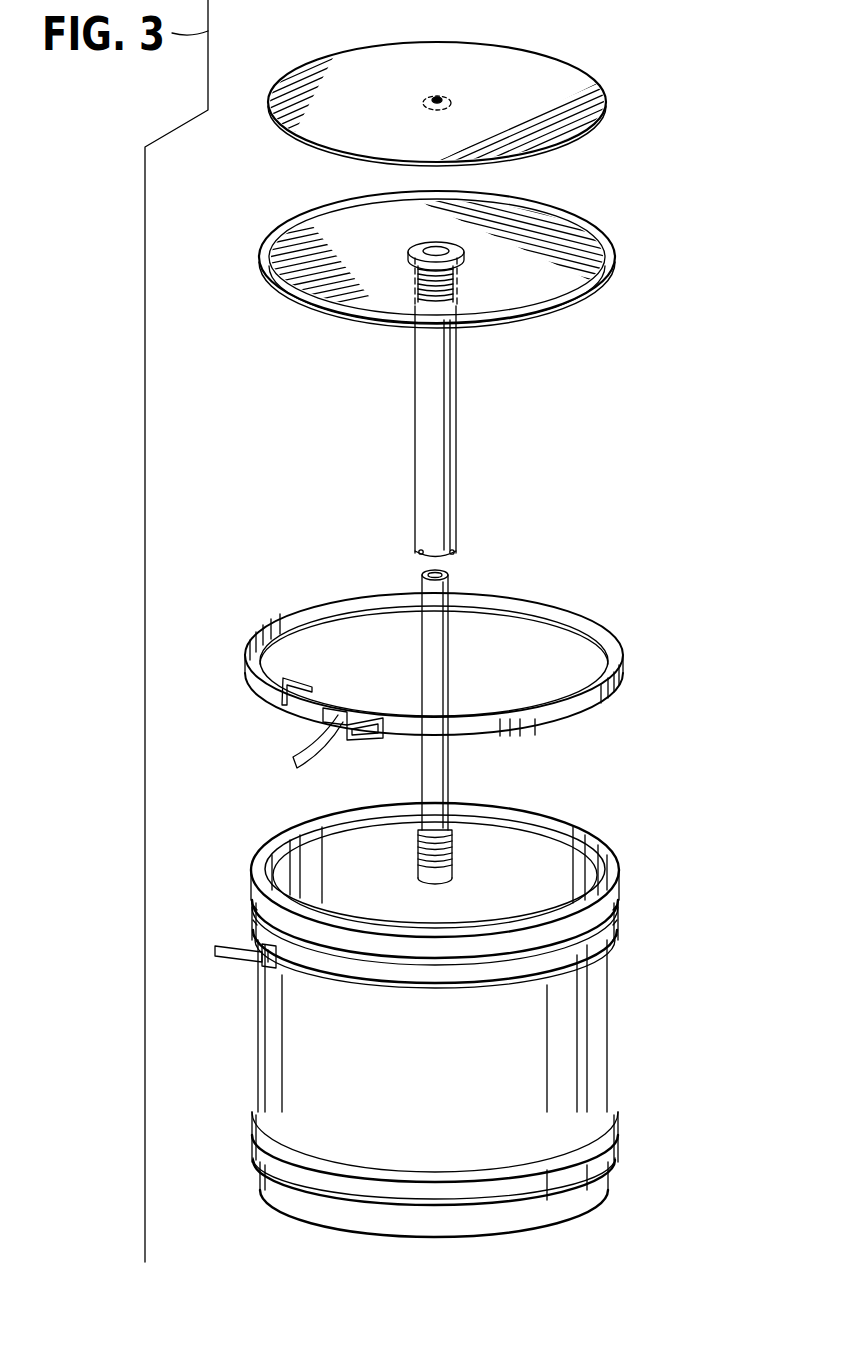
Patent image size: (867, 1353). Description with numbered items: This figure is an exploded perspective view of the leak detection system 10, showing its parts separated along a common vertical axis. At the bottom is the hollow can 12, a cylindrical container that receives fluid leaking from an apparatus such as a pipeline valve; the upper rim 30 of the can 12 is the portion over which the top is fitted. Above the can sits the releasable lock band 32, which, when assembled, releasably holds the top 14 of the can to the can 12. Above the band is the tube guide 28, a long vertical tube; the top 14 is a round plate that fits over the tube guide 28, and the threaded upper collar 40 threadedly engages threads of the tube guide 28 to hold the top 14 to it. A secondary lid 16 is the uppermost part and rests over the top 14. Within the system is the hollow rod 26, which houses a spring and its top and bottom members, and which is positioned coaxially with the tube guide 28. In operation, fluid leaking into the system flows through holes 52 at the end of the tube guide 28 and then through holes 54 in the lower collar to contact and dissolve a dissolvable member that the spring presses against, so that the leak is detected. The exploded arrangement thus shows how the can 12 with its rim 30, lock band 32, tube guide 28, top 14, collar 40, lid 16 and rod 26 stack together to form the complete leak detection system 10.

The leak detection system 10 is at (474, 1020).
The hollow can 12 is at (590, 1073).
The top 14 is at (570, 240).
The secondary lid 16 is at (537, 73).
The hollow rod 26 is at (447, 648).
The tube guide 28 is at (448, 428).
The container rim 30 is at (530, 852).
The releasable lock band 32 is at (627, 670).
The threaded upper collar 40 is at (457, 260).
The holes 52 is at (458, 553).
The holes 54 is at (422, 877).